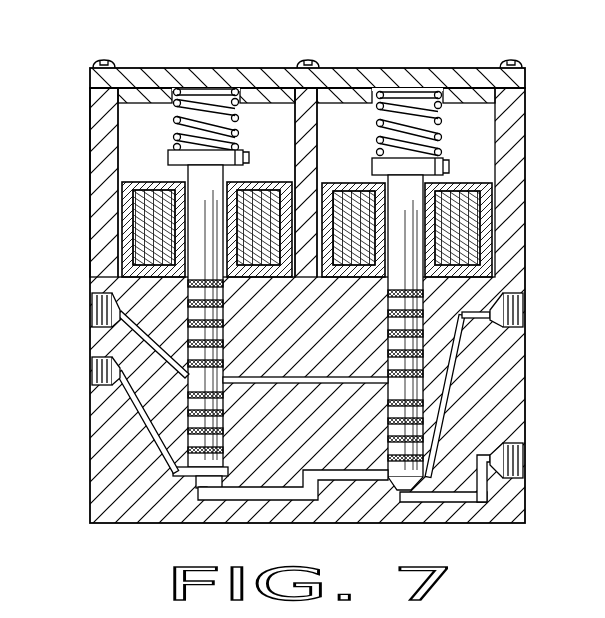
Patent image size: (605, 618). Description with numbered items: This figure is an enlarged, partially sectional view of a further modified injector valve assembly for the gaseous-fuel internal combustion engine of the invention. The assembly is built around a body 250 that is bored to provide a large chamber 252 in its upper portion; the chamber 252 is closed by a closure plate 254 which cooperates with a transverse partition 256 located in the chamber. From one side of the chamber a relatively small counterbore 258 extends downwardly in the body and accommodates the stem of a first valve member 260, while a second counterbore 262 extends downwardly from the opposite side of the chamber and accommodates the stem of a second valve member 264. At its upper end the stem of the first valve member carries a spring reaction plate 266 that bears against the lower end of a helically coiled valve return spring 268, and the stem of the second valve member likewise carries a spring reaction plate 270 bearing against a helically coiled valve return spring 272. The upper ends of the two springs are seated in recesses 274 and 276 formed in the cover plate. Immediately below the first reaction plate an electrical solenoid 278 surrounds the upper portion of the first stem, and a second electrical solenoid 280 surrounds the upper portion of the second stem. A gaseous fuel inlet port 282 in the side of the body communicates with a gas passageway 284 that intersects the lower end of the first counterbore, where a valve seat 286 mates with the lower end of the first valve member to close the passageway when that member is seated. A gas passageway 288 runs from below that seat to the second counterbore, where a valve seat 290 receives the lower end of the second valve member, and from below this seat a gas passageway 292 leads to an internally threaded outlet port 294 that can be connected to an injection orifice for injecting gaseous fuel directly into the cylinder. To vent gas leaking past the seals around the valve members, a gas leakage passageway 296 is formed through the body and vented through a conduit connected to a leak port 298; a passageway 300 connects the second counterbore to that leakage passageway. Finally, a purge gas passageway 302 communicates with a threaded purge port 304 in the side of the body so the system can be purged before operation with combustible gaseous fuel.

The body 250 is at (105, 468).
The chamber 252 is at (125, 130).
The closure plate 254 is at (140, 70).
The transverse partition 256 is at (306, 118).
The counterbore 258 is at (228, 320).
The first valve member 260 is at (225, 350).
The second counterbore 262 is at (374, 332).
The second valve member 264 is at (388, 352).
The spring reaction plate 266 is at (246, 158).
The valve return spring 268 is at (195, 105).
The spring reaction plate 270 is at (374, 168).
The valve return spring 272 is at (398, 110).
The recess 274 is at (205, 82).
The recess 276 is at (413, 86).
The electrical solenoid 278 is at (135, 215).
The second electrical solenoid 280 is at (492, 222).
The gaseous fuel inlet port 282 is at (100, 382).
The gas passageway 284 is at (135, 418).
The valve seat 286 is at (186, 500).
The gas passageway 288 is at (258, 501).
The valve seat 290 is at (378, 522).
The gas passageway 292 is at (470, 503).
The outlet port 294 is at (512, 446).
The gas leakage passageway 296 is at (130, 350).
The leak port 298 is at (98, 293).
The passageway 300 is at (273, 385).
The purge gas passageway 302 is at (455, 378).
The purge port 304 is at (524, 296).